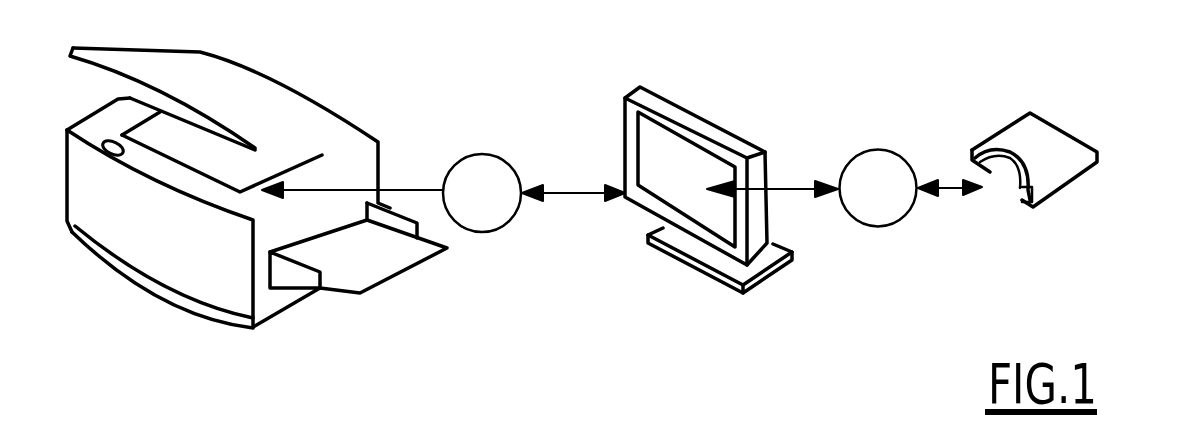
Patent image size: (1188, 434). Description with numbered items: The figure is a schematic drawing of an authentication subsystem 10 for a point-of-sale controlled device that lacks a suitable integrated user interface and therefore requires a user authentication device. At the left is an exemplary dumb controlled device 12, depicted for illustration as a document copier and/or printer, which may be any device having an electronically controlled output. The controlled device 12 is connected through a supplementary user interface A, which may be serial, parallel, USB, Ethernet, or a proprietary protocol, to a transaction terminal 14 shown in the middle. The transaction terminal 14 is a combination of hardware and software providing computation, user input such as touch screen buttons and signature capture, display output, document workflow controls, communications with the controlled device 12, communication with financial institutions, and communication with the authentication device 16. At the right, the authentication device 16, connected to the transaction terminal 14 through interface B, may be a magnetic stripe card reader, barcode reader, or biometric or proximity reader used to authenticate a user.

The authentication subsystem 10 is at (818, 80).
The controlled device 12 is at (318, 118).
The transaction terminal 14 is at (623, 126).
The authentication device 16 is at (1050, 143).